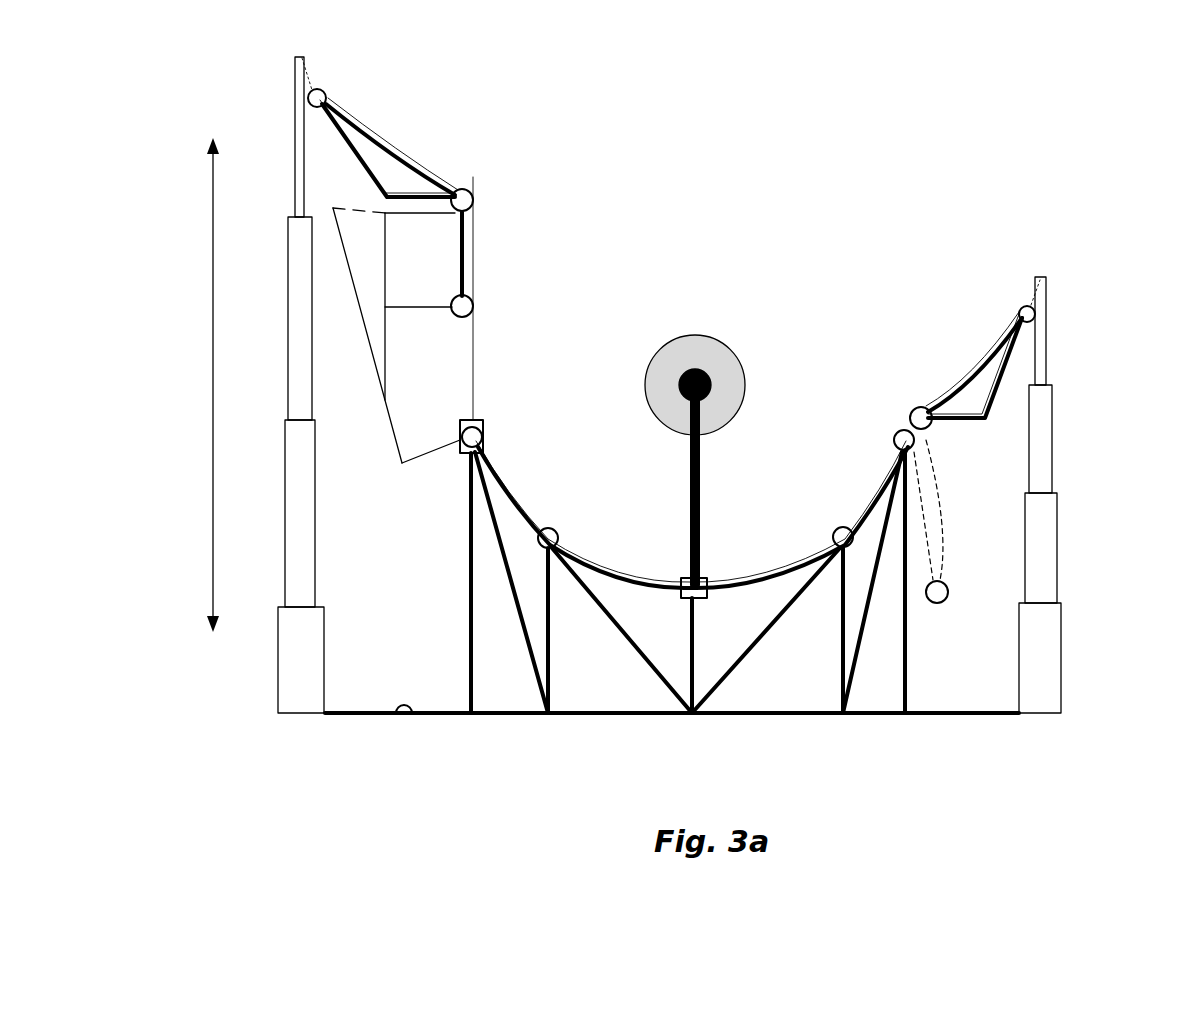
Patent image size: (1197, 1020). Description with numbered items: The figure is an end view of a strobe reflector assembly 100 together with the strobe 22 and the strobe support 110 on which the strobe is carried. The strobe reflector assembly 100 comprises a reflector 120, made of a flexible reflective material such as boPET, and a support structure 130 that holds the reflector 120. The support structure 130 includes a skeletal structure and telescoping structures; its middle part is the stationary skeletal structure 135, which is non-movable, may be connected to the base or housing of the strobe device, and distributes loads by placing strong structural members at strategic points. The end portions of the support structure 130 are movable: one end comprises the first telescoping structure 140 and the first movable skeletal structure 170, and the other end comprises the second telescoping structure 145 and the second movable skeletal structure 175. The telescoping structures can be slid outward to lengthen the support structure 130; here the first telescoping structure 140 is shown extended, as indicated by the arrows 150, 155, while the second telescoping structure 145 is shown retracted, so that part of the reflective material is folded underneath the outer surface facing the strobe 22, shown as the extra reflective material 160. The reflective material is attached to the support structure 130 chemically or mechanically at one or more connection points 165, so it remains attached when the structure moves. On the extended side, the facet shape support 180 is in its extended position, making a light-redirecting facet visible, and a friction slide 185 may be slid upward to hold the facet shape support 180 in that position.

The strobe reflector assembly 100 is at (1072, 122).
The strobe 22 is at (730, 346).
The strobe support 110 is at (702, 487).
The reflector 120 is at (532, 458).
The support structure 130 is at (730, 732).
The stationary skeletal structure 135 is at (638, 660).
The first telescoping structure 140 is at (294, 708).
The second telescoping structure 145 is at (1043, 547).
The arrow 150 is at (210, 293).
The arrow 155 is at (336, 466).
The extra reflective material 160 is at (962, 583).
The connection points 165 is at (322, 94).
The first movable skeletal structure 170 is at (368, 140).
The second movable skeletal structure 175 is at (987, 368).
The facet shape support 180 is at (400, 250).
The friction slide 185 is at (460, 445).